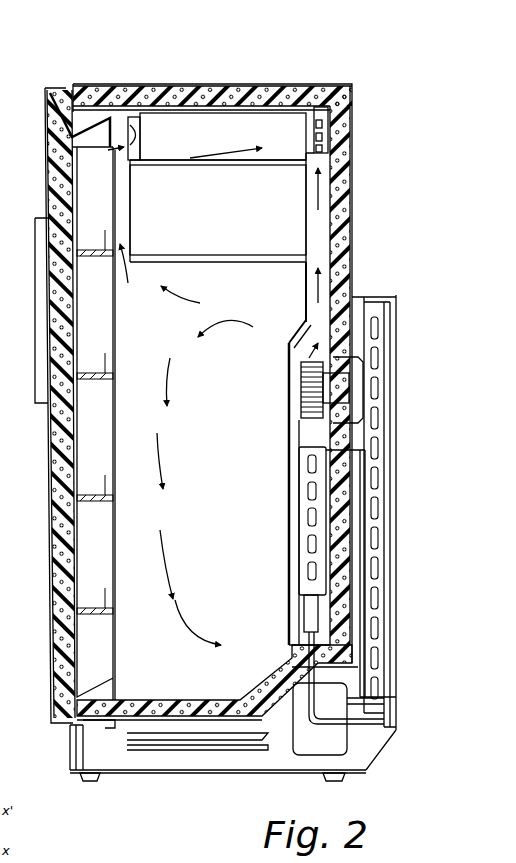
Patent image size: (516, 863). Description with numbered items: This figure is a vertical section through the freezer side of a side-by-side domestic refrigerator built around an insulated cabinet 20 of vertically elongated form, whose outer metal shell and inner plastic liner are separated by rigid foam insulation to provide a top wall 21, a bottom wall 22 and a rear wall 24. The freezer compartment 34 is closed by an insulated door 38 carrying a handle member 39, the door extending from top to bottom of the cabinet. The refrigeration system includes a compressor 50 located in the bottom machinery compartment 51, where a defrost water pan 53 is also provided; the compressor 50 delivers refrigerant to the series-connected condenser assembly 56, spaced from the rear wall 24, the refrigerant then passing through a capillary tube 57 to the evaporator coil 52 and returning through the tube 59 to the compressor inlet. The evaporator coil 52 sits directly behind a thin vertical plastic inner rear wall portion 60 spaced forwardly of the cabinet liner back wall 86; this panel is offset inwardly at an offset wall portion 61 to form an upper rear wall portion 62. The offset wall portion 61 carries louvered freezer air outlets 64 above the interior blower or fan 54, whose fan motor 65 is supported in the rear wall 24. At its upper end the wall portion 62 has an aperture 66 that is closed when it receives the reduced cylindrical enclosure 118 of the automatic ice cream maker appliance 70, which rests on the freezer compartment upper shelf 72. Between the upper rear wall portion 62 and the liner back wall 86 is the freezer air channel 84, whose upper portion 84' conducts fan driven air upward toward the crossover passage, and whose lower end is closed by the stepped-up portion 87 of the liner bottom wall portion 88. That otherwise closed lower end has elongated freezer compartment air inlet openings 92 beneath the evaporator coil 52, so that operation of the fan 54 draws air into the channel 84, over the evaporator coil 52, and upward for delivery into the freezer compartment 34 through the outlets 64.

The insulated cabinet 20 is at (126, 83).
The top wall 21 is at (179, 84).
The rear wall 24 is at (350, 221).
The insulated door 38 is at (51, 538).
The freezer compartment 34 is at (123, 443).
The automatic ice cream maker appliance 70 is at (58, 150).
The handle member 39 is at (35, 218).
The aperture 66 is at (316, 118).
The freezer compartment upper shelf 72 is at (190, 160).
The upper portion of freezer air channel 84' is at (218, 211).
The reduced cylindrical enclosure 118 is at (319, 120).
The cabinet liner back wall 86 is at (330, 228).
The upper rear wall portion 62 is at (306, 277).
The offset wall portion 61 is at (306, 340).
The louvered freezer air outlets 64 is at (290, 350).
The inner rear wall portion 60 is at (288, 406).
The interior blower or fan 54 is at (308, 388).
The fan motor 65 is at (349, 380).
The condenser assembly 56 is at (381, 365).
The return tube 59 is at (363, 633).
The evaporator coil 52 is at (306, 532).
The freezer air channel 84 is at (280, 602).
The capillary tube 57 is at (309, 626).
The stepped-up portion 87 is at (311, 638).
The liner bottom wall portion 88 is at (140, 700).
The freezer compartment air inlet openings 92 is at (203, 638).
The bottom wall 22 is at (110, 724).
The bottom machinery compartment 51 is at (120, 755).
The defrost water pan 53 is at (213, 740).
The compressor 50 is at (349, 740).